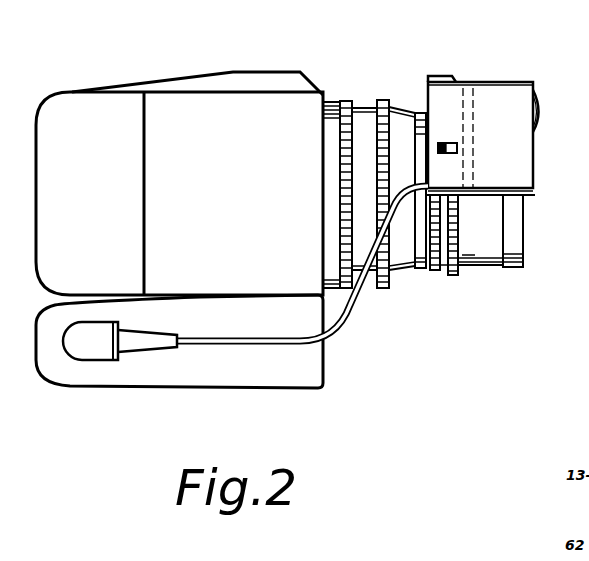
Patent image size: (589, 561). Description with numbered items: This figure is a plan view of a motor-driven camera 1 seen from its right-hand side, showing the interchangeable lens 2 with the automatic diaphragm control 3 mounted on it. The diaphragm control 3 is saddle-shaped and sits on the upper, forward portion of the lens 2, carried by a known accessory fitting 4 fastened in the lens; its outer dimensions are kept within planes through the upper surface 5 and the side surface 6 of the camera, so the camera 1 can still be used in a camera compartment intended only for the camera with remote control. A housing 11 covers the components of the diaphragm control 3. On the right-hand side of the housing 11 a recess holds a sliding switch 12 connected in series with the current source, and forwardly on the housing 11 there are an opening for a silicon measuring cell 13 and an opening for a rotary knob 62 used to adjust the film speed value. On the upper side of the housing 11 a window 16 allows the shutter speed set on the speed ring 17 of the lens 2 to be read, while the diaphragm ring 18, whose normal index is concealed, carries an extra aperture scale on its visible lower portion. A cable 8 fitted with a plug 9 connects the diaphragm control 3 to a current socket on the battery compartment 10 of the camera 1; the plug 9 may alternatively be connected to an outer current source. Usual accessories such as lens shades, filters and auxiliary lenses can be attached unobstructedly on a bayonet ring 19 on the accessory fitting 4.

The motor-driven camera 1 is at (179, 231).
The interchangeable lens 2 is at (361, 105).
The automatic diaphragm control 3 is at (507, 116).
The accessory fitting 4 is at (470, 270).
The upper surface 5 is at (275, 78).
The side surface 6 is at (197, 103).
The cable 8 is at (352, 318).
The plug 9 is at (100, 352).
The battery compartment 10 is at (70, 373).
The housing 11 is at (533, 83).
The sliding switch 12 is at (446, 143).
The silicon measuring cell 13 is at (561, 115).
The rotary knob 62 is at (538, 125).
The window 16 is at (440, 73).
The speed ring 17 is at (433, 278).
The diaphragm ring 18 is at (452, 277).
The bayonet ring 19 is at (520, 273).